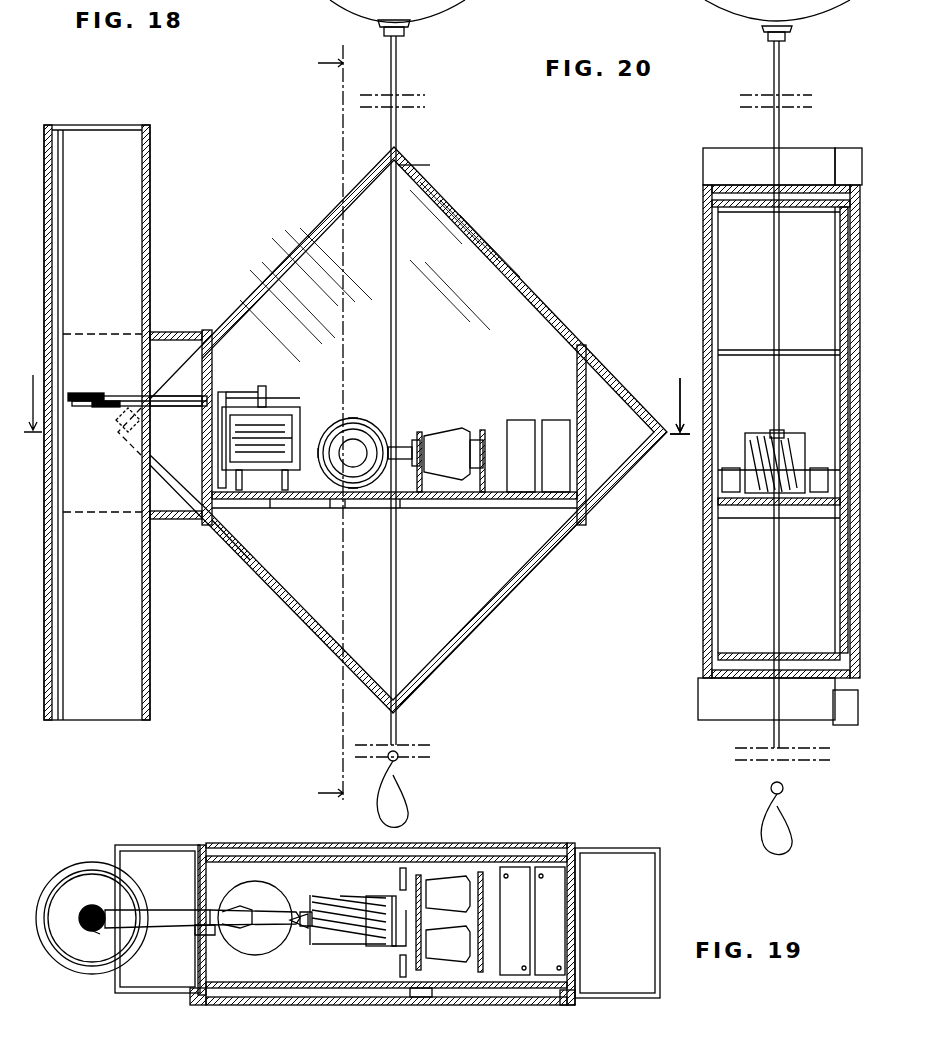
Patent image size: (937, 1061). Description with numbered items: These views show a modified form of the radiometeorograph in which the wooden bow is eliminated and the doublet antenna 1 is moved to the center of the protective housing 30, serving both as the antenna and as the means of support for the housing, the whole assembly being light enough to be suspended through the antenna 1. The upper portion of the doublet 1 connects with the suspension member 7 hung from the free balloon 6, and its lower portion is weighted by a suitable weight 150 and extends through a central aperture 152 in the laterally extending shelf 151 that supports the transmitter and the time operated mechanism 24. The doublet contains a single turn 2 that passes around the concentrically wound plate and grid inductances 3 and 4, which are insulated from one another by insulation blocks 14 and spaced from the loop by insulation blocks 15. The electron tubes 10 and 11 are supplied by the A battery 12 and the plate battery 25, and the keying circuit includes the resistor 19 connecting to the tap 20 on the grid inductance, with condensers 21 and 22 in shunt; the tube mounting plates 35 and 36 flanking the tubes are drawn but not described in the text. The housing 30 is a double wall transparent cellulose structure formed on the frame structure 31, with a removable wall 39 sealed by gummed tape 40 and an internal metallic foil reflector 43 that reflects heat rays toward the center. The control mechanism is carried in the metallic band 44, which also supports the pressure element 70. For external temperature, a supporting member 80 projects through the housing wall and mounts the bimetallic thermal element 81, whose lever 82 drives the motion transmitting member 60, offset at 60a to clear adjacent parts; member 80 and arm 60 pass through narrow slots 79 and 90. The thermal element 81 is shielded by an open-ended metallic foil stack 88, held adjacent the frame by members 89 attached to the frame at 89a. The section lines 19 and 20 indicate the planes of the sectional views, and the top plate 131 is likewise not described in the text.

In FIG. 18, the doublet antenna 1 is at (399, 142).
In FIG. 20, the doublet antenna 1 is at (784, 148).
In FIG. 19, the doublet antenna 1 is at (390, 910).
In FIG. 18, the single turn 2 is at (356, 418).
In FIG. 20, the single turn 2 is at (780, 430).
In FIG. 19, the single turn 2 is at (306, 932).
In FIG. 18, the plate circuit inductance 3 is at (322, 500).
In FIG. 20, the plate circuit inductance 3 is at (752, 510).
In FIG. 19, the plate circuit inductance 3 is at (352, 896).
In FIG. 18, the grid circuit inductance 4 is at (378, 500).
In FIG. 20, the grid circuit inductance 4 is at (716, 462).
In FIG. 19, the grid circuit inductance 4 is at (372, 946).
In FIG. 18, the free balloon 6 is at (418, 24).
In FIG. 20, the free balloon 6 is at (815, 22).
In FIG. 18, the suspension member 7 is at (400, 82).
In FIG. 20, the suspension member 7 is at (782, 72).
In FIG. 19, the electron tube 10 is at (448, 894).
In FIG. 18, the electron tube 11 is at (452, 478).
In FIG. 19, the electron tube 11 is at (448, 944).
In FIG. 18, the A battery 12 is at (556, 420).
In FIG. 19, the A battery 12 is at (580, 920).
In FIG. 18, the insulation blocks 14 is at (326, 430).
In FIG. 18, the insulation blocks 15 is at (298, 535).
In FIG. 20, the insulation blocks 15 is at (760, 426).
In FIG. 19, the insulation blocks 15 is at (330, 946).
In FIG. 18, the resistor 19 is at (352, 391).
In FIG. 20, the resistor 19 is at (672, 395).
In FIG. 18, the tap 20 is at (332, 430).
In FIG. 19, the tap 20 is at (336, 824).
In FIG. 20, the condenser 21 is at (706, 522).
In FIG. 19, the condenser 21 is at (404, 866).
In FIG. 18, the condenser 22 is at (410, 500).
In FIG. 20, the condenser 22 is at (816, 494).
In FIG. 19, the condenser 22 is at (414, 996).
In FIG. 18, the time operated mechanism 24 is at (270, 398).
In FIG. 19, the time operated mechanism 24 is at (236, 902).
In FIG. 18, the plate battery 25 is at (521, 420).
In FIG. 19, the plate battery 25 is at (520, 880).
In FIG. 18, the protective housing 30 is at (498, 290).
In FIG. 20, the protective housing 30 is at (706, 496).
In FIG. 19, the protective housing 30 is at (212, 843).
In FIG. 18, the frame structure 31 is at (430, 156).
In FIG. 19, the frame structure 31 is at (138, 845).
In FIG. 18, the mount plate 35 is at (422, 430).
In FIG. 19, the mount plate 35 is at (422, 876).
In FIG. 18, the mount plate 36 is at (482, 428).
In FIG. 19, the mount plate 36 is at (484, 876).
In FIG. 20, the removable wall 39 is at (842, 250).
In FIG. 19, the removable wall 39 is at (478, 996).
In FIG. 20, the gummed tape 40 is at (835, 170).
In FIG. 19, the gummed tape 40 is at (188, 1000).
In FIG. 18, the metallic foil reflector 43 is at (442, 628).
In FIG. 20, the metallic foil reflector 43 is at (778, 652).
In FIG. 18, the metallic band 44 is at (135, 522).
In FIG. 19, the metallic band 44 is at (266, 912).
In FIG. 18, the motion transmitting member 60 is at (224, 386).
In FIG. 19, the offset 60a is at (236, 936).
In FIG. 18, the pressure element 70 is at (222, 545).
In FIG. 18, the slot 79 is at (180, 408).
In FIG. 19, the slot 79 is at (196, 940).
In FIG. 18, the supporting member 80 is at (104, 408).
In FIG. 19, the supporting member 80 is at (170, 845).
In FIG. 18, the bimetallic thermal element 81 is at (82, 392).
In FIG. 19, the bimetallic thermal element 81 is at (88, 906).
In FIG. 18, the lever 82 is at (120, 392).
In FIG. 19, the lever 82 is at (94, 934).
In FIG. 18, the stack 88 is at (148, 238).
In FIG. 19, the stack 88 is at (68, 968).
In FIG. 18, the members 89 is at (156, 330).
In FIG. 19, the members 89 is at (58, 872).
In FIG. 18, the attachment point 89a is at (208, 330).
In FIG. 18, the slot 90 is at (124, 440).
In FIG. 19, the slot 90 is at (145, 906).
In FIG. 20, the top plate 131 is at (703, 192).
In FIG. 18, the weight 150 is at (402, 795).
In FIG. 20, the weight 150 is at (790, 828).
In FIG. 18, the shelf 151 is at (272, 505).
In FIG. 20, the shelf 151 is at (790, 520).
In FIG. 19, the shelf 151 is at (246, 856).
In FIG. 18, the central aperture 152 is at (366, 530).